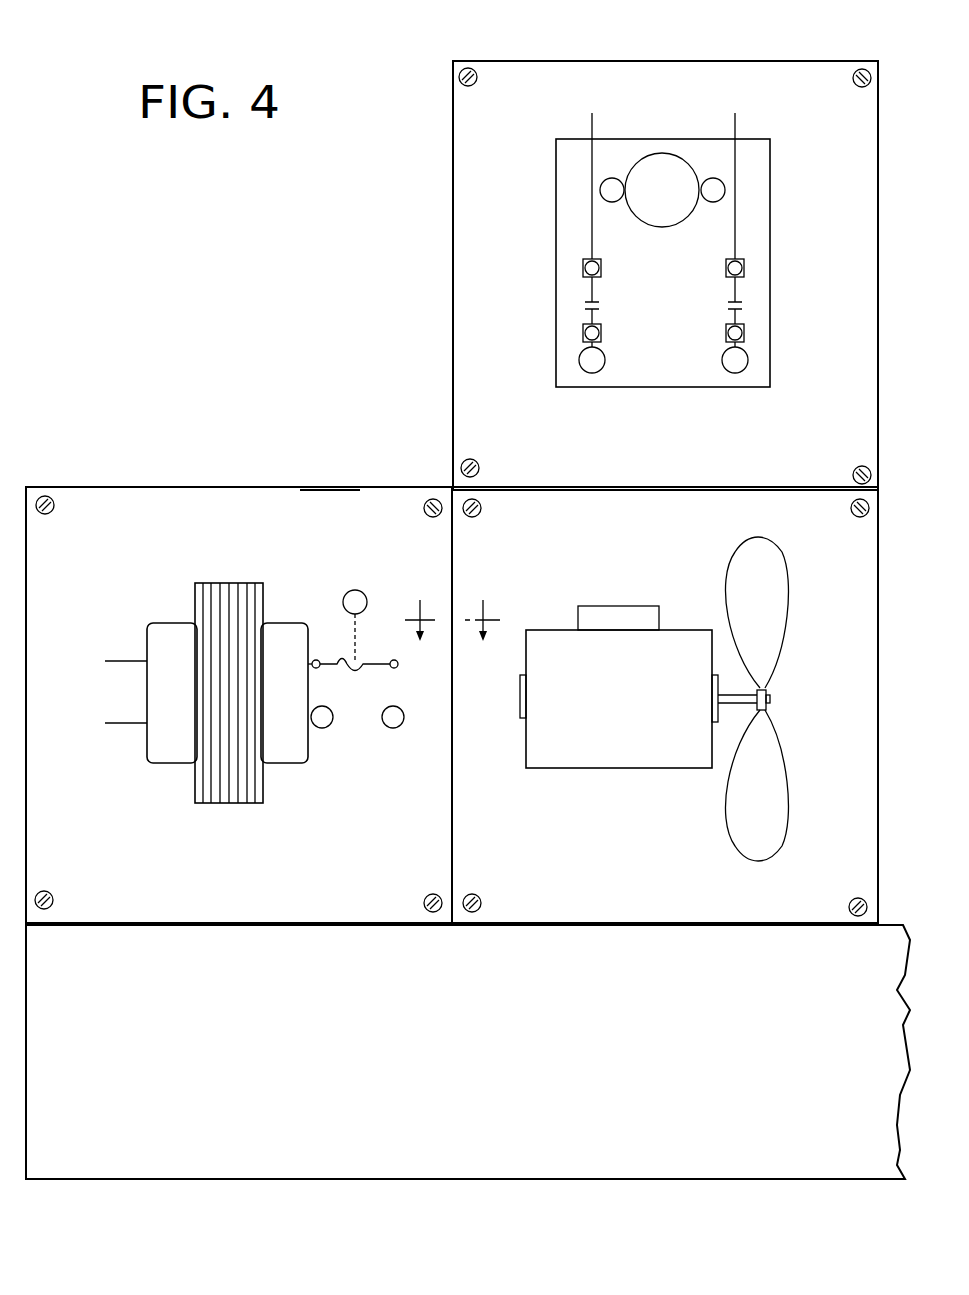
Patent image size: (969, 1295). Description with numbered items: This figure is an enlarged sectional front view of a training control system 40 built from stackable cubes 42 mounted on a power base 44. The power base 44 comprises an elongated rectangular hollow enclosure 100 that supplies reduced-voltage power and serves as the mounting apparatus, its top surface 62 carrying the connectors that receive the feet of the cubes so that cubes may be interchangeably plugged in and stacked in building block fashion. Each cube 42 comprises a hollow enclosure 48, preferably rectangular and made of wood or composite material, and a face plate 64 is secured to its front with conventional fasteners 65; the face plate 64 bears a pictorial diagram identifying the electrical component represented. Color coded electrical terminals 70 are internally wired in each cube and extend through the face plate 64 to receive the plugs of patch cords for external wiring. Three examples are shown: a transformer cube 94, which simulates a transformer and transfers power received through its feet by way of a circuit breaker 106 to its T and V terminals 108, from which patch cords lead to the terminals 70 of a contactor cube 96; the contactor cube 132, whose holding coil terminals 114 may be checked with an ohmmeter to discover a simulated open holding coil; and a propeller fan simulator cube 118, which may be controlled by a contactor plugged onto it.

The modular electrical control apparatus 40 is at (296, 326).
The cube 42 is at (436, 411).
The power base 44 is at (410, 1180).
The hollow enclosure 48 is at (168, 480).
The top surface of the power base 62 is at (687, 915).
The face plate 64 is at (557, 262).
The fasteners 65 is at (457, 73).
The electrical terminals 70 is at (709, 170).
The transformer cube 94 is at (113, 486).
The contactor cube 96 is at (641, 50).
The elongated rectangular hollow enclosure 100 is at (328, 1160).
The circuit breaker 106 is at (341, 660).
The T and V terminals 108 is at (406, 709).
The holding coil terminals 114 is at (612, 178).
The propeller fan simulator cube 118 is at (794, 926).
The contactor cube 132 is at (452, 275).